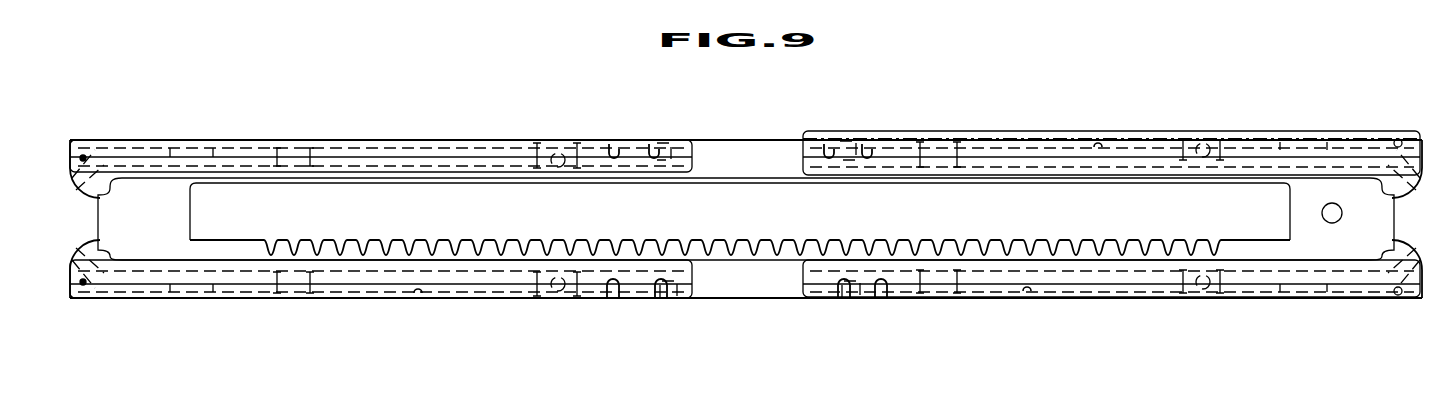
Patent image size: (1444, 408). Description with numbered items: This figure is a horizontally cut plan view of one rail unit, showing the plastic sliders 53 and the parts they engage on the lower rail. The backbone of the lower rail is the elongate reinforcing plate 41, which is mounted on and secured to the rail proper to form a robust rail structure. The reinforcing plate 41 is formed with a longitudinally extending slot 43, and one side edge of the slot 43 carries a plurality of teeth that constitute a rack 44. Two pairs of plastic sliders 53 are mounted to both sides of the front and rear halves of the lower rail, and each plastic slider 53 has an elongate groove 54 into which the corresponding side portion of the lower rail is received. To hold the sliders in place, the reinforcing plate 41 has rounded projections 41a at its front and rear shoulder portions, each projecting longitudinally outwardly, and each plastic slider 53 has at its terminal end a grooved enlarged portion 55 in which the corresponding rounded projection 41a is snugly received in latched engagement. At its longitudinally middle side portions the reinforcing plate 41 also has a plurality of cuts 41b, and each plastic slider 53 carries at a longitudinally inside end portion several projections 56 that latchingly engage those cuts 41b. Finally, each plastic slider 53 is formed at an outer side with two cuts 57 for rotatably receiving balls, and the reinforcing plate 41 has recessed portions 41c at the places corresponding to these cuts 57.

The reinforcing plate 41 is at (423, 140).
The rounded projection 41a is at (74, 138).
The cut 41b is at (664, 148).
The recessed portion 41c is at (548, 143).
The slot 43 is at (1288, 195).
The rack 44 is at (905, 237).
The plastic slider 53 is at (332, 138).
The elongate groove 54 is at (1102, 140).
The grooved enlarged portion 55 is at (1405, 290).
The projection 56 is at (653, 155).
The cut 57 is at (558, 150).